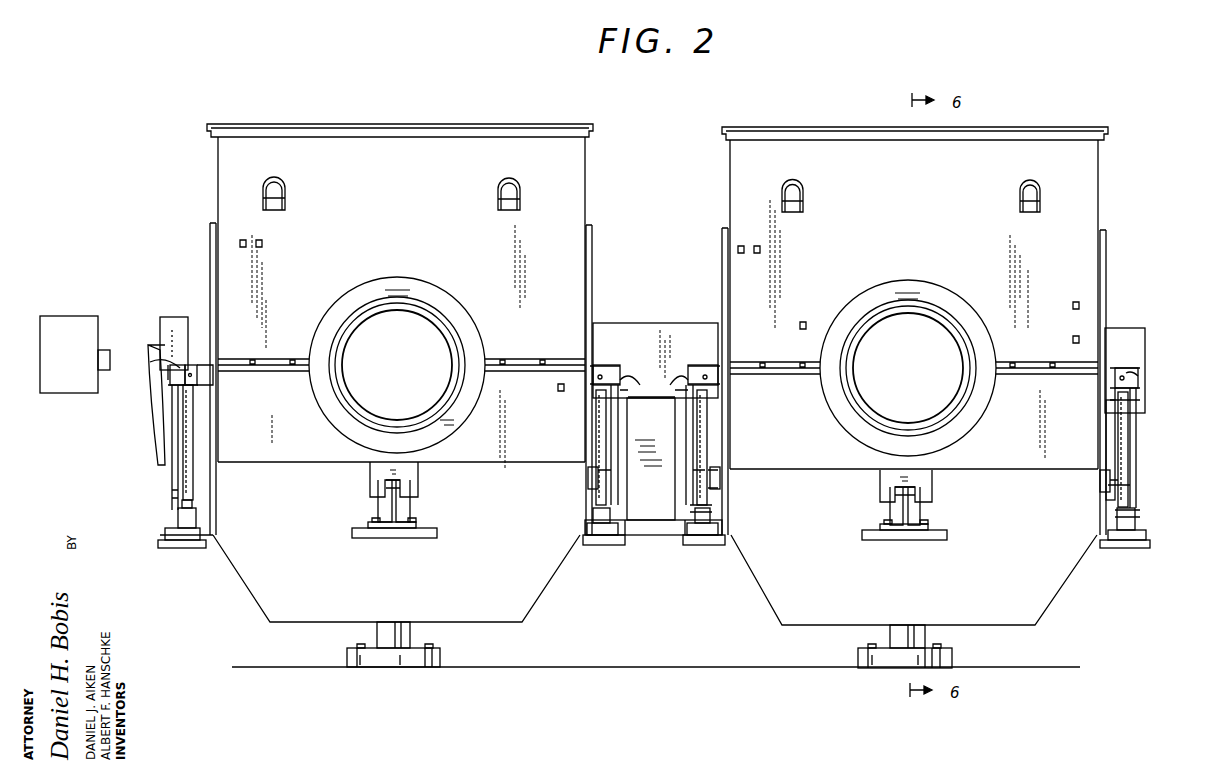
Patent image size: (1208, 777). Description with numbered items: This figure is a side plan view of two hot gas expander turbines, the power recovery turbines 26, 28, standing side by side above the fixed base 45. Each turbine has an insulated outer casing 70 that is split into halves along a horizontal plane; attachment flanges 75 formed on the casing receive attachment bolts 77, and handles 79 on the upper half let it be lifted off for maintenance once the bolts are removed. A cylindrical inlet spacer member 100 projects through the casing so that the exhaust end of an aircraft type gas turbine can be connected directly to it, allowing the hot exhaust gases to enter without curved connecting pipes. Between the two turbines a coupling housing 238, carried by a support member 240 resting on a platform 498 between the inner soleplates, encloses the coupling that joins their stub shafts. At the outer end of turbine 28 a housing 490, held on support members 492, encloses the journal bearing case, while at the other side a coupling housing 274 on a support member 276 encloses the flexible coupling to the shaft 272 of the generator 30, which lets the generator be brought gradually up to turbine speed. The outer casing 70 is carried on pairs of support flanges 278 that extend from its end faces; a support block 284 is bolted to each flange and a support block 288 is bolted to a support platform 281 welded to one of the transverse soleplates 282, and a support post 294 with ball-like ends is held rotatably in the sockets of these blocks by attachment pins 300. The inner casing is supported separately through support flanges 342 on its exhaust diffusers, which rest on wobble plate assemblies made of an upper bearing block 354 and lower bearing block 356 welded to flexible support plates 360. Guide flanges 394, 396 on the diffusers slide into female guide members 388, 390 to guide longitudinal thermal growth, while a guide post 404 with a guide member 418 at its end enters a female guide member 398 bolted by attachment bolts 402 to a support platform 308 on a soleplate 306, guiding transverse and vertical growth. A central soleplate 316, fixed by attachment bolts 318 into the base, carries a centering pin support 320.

The power recovery turbine 26 is at (420, 119).
The power recovery turbine 28 is at (1078, 121).
The generator 30 is at (92, 307).
The fixed base 45 is at (652, 666).
The outer casing 70 is at (595, 198).
The attachment flanges 75 is at (290, 359).
The attachment bolts 77 is at (262, 361).
The handles 79 is at (287, 190).
The inlet spacer member 100 is at (418, 310).
The coupling housing 238 is at (655, 318).
The support member 240 is at (648, 540).
The shaft 272 is at (110, 352).
The coupling housing 274 is at (170, 316).
The support member 276 is at (148, 434).
The support flange 278 is at (200, 365).
The support platform 281 is at (165, 543).
The soleplates 282 is at (200, 548).
The support block 284 is at (197, 372).
The support block 288 is at (196, 514).
The support post 294 is at (193, 432).
The attachment pins 300 is at (615, 358).
The soleplate 306 is at (395, 540).
The support platform 308 is at (416, 526).
The centrally located soleplate 316 is at (440, 657).
The attachment bolts 318 is at (357, 645).
The centering pin support 320 is at (412, 632).
The support flange 342 is at (170, 370).
The upper bearing block 354 is at (168, 380).
The lower bearing block 356 is at (182, 504).
The support plate 360 is at (172, 474).
The female guide member 388 is at (655, 471).
The female guide member 390 is at (693, 482).
The guide flange 394 is at (720, 476).
The guide flange 396 is at (588, 470).
The female guide member 398 is at (410, 506).
The attachment bolts 402 is at (375, 518).
The guide post 404 is at (418, 485).
The guide member 418 is at (388, 500).
The housing 490 is at (1130, 328).
The support members 492 is at (1106, 432).
The platform 498 is at (676, 540).